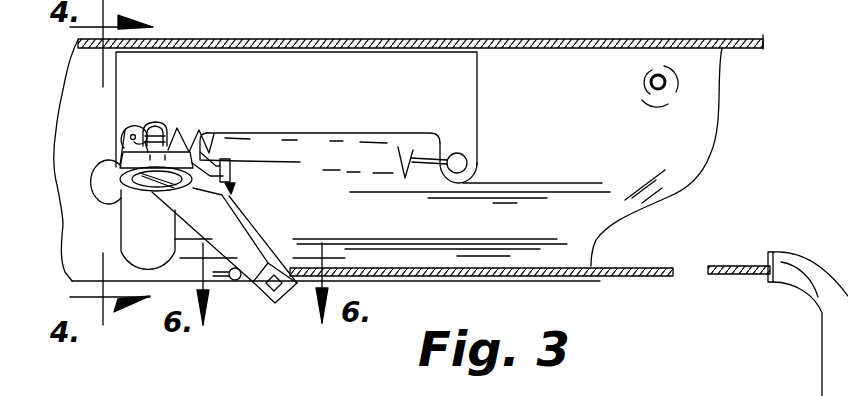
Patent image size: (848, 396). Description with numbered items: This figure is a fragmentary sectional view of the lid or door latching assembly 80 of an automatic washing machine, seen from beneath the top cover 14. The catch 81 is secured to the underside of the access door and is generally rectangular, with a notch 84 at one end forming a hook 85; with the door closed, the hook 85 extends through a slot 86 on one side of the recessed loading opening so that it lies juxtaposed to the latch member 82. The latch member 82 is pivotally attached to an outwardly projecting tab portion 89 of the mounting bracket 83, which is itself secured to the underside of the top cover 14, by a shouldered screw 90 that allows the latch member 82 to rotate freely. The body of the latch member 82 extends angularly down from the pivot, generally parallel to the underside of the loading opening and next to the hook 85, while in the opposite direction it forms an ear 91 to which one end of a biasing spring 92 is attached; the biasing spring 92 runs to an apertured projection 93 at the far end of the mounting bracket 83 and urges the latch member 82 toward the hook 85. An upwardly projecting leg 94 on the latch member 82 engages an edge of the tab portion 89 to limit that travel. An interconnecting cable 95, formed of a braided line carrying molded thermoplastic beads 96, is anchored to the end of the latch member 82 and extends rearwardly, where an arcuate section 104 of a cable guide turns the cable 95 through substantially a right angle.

The top cover 14 is at (722, 97).
The lid or door latching assembly 80 is at (578, 158).
The catch 81 is at (120, 211).
The latch member 82 is at (262, 222).
The mounting bracket 83 is at (478, 92).
The notch 84 is at (173, 231).
The hook 85 is at (168, 283).
The slot 86 is at (105, 162).
The tab portion 89 is at (125, 128).
The shouldered screw 90 is at (105, 186).
The ear 91 is at (145, 125).
The biasing spring 92 is at (413, 152).
The apertured projection 93 is at (480, 168).
The upwardly projecting leg 94 is at (236, 174).
The interconnecting cable 95 is at (741, 276).
The thermoplastic beads 96 is at (236, 282).
The arcuate section 104 is at (768, 256).